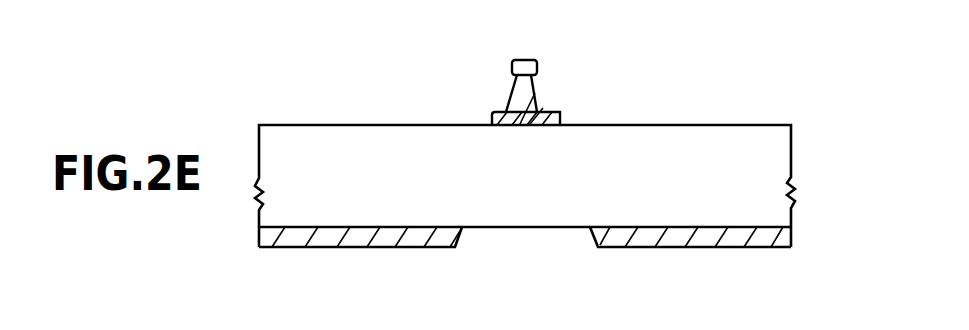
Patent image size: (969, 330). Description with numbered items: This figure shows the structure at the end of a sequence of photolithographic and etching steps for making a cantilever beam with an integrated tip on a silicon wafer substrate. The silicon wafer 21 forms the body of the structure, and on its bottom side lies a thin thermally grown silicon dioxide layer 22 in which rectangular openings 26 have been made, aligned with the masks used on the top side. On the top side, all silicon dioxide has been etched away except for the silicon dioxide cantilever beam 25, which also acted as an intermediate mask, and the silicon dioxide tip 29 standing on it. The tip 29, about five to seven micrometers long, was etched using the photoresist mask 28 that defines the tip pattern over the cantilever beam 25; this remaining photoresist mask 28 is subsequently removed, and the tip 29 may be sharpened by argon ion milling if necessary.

The silicon wafer 21 is at (783, 163).
The SiO2 layer 22 is at (787, 238).
The cantilever beam 25 is at (562, 114).
The rectangular openings 26 is at (542, 228).
The photoresist mask 28 is at (530, 58).
The tip 29 is at (533, 92).